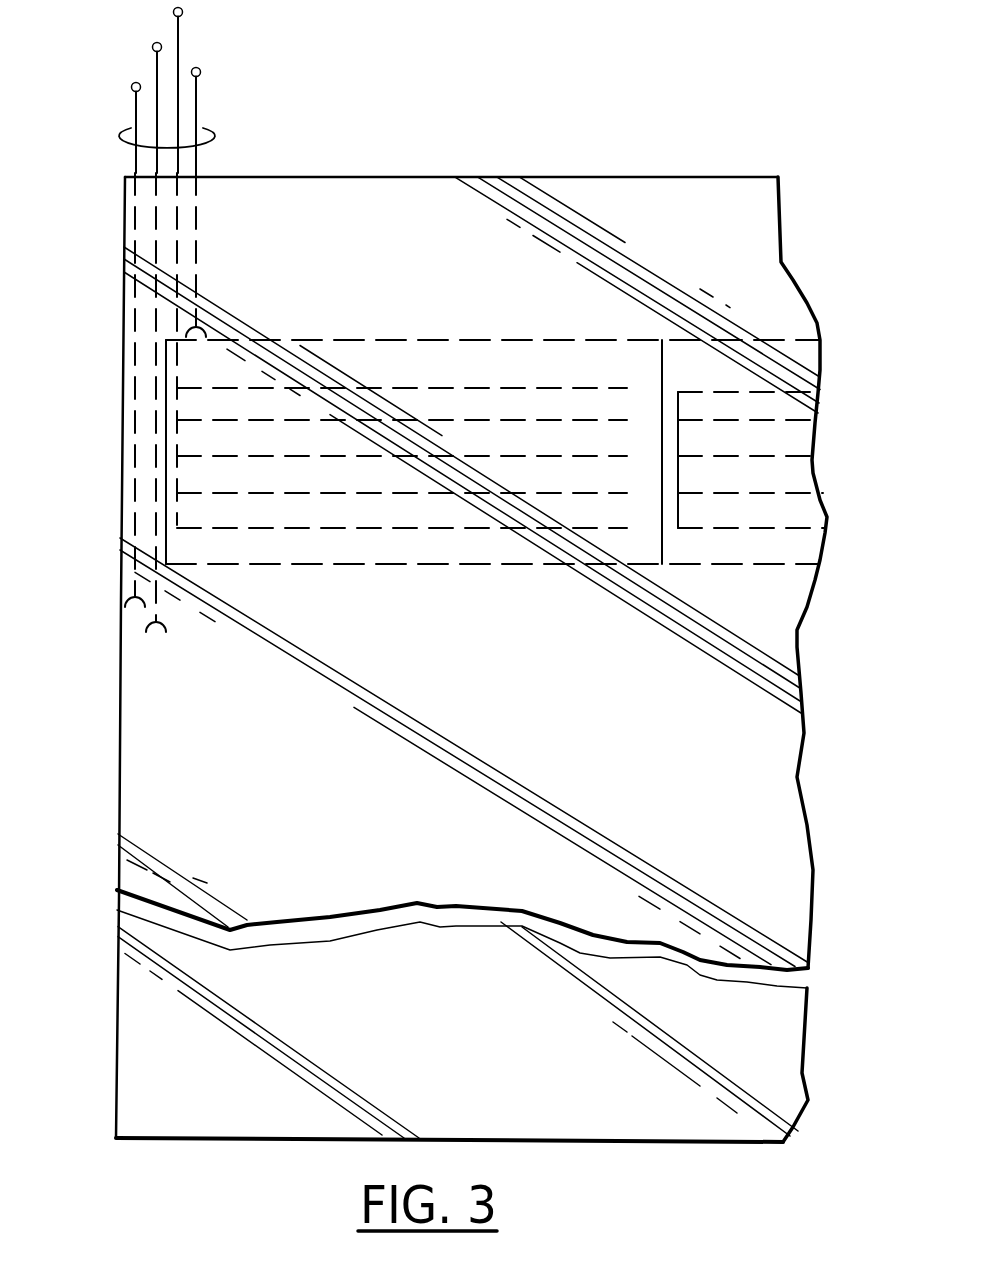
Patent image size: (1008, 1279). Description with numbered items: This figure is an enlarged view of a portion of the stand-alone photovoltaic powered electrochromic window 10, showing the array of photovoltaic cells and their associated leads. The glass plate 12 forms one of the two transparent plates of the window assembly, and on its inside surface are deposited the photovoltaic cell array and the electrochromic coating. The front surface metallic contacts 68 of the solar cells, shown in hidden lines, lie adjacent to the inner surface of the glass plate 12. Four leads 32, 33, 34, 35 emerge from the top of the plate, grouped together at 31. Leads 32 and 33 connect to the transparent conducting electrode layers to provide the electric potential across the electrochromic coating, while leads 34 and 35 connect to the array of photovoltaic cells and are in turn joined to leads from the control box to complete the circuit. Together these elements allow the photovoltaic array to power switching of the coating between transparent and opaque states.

The stand-alone photovoltaic powered electrochromic window 10 is at (592, 158).
The glass plate 12 is at (119, 713).
The lead group 31 is at (215, 136).
The lead 32 is at (137, 104).
The lead 33 is at (157, 63).
The lead 34 is at (180, 32).
The lead 35 is at (198, 100).
The front surface metallic contacts 68 is at (777, 390).